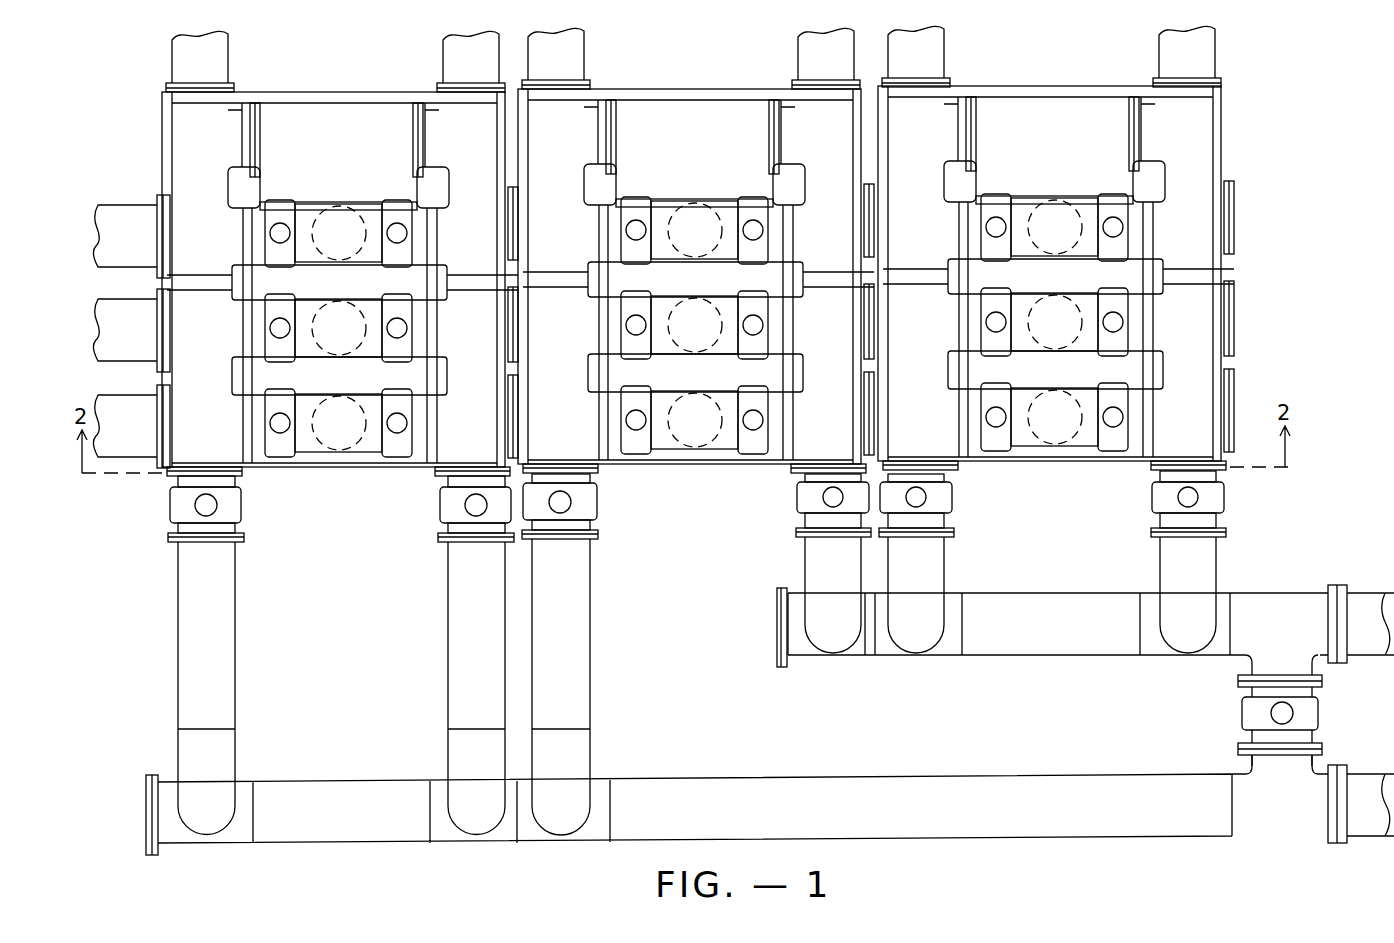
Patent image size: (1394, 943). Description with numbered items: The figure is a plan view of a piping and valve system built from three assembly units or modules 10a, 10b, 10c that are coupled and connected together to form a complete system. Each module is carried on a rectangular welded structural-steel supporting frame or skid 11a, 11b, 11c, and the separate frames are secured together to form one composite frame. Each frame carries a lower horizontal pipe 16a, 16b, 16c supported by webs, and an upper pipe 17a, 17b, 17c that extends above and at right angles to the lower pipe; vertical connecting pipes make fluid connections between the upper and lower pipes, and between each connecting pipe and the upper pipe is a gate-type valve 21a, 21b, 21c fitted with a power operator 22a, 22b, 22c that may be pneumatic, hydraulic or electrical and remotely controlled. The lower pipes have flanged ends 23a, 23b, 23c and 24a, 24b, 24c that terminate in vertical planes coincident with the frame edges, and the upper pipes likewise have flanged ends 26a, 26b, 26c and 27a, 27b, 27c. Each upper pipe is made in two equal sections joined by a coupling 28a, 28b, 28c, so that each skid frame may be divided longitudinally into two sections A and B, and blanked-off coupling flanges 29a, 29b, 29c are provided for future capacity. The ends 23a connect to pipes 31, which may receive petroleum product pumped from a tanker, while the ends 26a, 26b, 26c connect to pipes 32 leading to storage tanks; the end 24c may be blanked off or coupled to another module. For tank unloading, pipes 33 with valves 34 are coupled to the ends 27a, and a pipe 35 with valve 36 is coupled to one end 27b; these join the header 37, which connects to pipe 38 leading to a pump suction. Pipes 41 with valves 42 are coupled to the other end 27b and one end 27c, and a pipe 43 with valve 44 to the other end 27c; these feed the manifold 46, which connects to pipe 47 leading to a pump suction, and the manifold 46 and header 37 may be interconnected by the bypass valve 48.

The assembly unit or module 10a is at (364, 479).
The assembly unit or module 10b is at (689, 298).
The assembly unit or module 10c is at (1049, 292).
The supporting frame 11a is at (300, 478).
The supporting frame 11b is at (690, 484).
The supporting frame 11c is at (1050, 478).
The horizontal parallel pipe 16a is at (352, 206).
The horizontal parallel pipe 16b is at (694, 308).
The horizontal parallel pipe 16c is at (1054, 305).
The upper pipe 17a is at (480, 145).
The upper pipe 17b is at (690, 276).
The upper pipe 17c is at (1050, 273).
The valve 21a is at (272, 212).
The valve 21b is at (695, 309).
The valve 21c is at (1054, 306).
The operator 22a is at (386, 235).
The operator 22b is at (694, 326).
The operator 22c is at (1054, 323).
The pipe end 23a is at (176, 214).
The pipe end 23b is at (570, 315).
The pipe end 23c is at (930, 312).
The pipe end 24a is at (472, 216).
The pipe end 24b is at (828, 315).
The pipe end 24c is at (1188, 312).
The pipe end 26a is at (232, 94).
The pipe end 26b is at (692, 111).
The pipe end 26c is at (1053, 108).
The pipe end 27a is at (222, 466).
The pipe end 27b is at (694, 449).
The pipe end 27c is at (1054, 446).
The coupling 28a is at (244, 284).
The coupling 28b is at (698, 279).
The coupling 28c is at (1058, 276).
The blanked off coupling flange 29a is at (248, 133).
The blanked off coupling flange 29b is at (692, 137).
The blanked off coupling flange 29c is at (1052, 134).
The pipe 31 is at (130, 248).
The pipe 32 is at (216, 58).
The pipe 33 is at (230, 606).
The valve 34 is at (176, 505).
The pipe 35 is at (580, 602).
The valve 36 is at (597, 505).
The header 37 is at (712, 780).
The pipe 38 is at (1365, 778).
The pipe 41 is at (806, 566).
The valve 42 is at (800, 500).
The pipe 43 is at (1205, 570).
The valve 44 is at (1222, 500).
The manifold 46 is at (1058, 650).
The pipe 47 is at (1355, 592).
The bypass valve 48 is at (1240, 692).
The frame section A is at (160, 160).
The frame section B is at (160, 382).